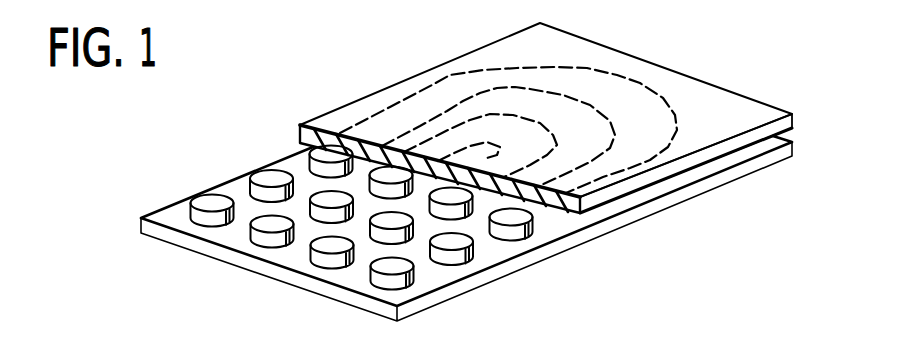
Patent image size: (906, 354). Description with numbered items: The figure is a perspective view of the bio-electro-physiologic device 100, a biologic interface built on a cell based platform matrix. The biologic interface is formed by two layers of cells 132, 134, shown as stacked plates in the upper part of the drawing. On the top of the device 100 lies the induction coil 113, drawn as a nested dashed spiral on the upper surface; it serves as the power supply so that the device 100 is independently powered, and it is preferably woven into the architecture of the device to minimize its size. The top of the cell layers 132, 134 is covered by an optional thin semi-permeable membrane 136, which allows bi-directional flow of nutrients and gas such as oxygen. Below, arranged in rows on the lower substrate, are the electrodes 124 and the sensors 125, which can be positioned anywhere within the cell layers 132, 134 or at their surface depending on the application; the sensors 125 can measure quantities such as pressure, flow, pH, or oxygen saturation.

The bio-electro-physiologic device 100 is at (238, 140).
The induction coil 113 is at (433, 90).
The electrodes 124 is at (472, 254).
The sensors 125 is at (262, 240).
The layer of cells 132 is at (793, 116).
The layer of cells 134 is at (795, 147).
The semi-permeable membrane 136 is at (704, 97).